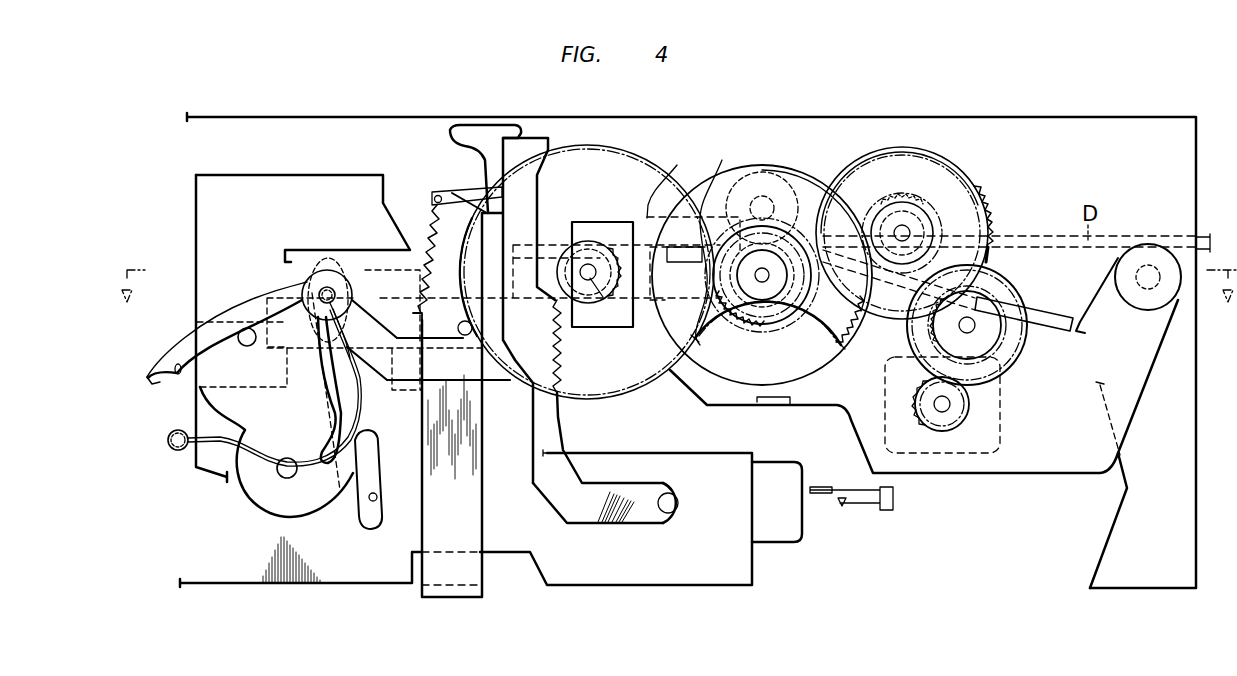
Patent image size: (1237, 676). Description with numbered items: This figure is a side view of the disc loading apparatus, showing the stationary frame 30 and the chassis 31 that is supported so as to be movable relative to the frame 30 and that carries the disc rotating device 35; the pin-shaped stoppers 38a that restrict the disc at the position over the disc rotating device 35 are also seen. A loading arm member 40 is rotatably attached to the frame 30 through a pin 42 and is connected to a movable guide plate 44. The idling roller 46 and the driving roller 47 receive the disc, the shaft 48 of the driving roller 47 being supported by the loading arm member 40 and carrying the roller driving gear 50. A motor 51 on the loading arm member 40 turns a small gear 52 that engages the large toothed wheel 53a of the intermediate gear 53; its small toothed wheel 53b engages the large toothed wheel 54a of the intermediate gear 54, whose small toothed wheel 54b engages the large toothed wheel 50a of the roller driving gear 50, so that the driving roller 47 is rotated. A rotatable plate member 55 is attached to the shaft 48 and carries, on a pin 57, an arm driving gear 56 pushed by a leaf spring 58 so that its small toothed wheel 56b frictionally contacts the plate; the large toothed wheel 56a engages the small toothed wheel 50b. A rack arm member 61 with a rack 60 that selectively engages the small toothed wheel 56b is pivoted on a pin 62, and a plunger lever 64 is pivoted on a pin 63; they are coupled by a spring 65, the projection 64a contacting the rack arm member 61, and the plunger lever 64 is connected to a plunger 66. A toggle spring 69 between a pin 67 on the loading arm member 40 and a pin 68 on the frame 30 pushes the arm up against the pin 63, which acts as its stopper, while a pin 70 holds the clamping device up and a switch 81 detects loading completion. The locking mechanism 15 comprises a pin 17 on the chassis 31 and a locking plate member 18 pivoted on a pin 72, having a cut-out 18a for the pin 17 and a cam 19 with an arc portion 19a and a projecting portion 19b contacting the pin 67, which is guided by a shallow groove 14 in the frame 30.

The shallow groove 14 is at (378, 498).
The locking mechanism 15 is at (235, 279).
The pin 17 is at (252, 346).
The locking plate member 18 is at (257, 498).
The cut-out 18a is at (176, 355).
The cam 19 is at (352, 408).
The arc portion 19a is at (338, 340).
The projecting portion 19b is at (365, 440).
The frame 30 is at (1098, 132).
The chassis 31 is at (258, 300).
The disc rotating device 35 is at (382, 272).
The pin-shaped stoppers 38a is at (692, 215).
The loading arm member 40 is at (1045, 466).
The pin 42 is at (1145, 285).
The movable guide plate 44 is at (1070, 300).
The idling roller 46 is at (745, 168).
The driving roller 47 is at (772, 312).
The shaft 48 is at (768, 278).
The roller driving gear 50 is at (804, 158).
The large toothed wheel 50a is at (820, 172).
The small toothed wheel 50b is at (757, 330).
The motor 51 is at (1000, 437).
The small gear 52 is at (970, 405).
The intermediate gear 53 is at (1016, 278).
The large toothed wheel 53a is at (1030, 300).
The small toothed wheel 53b is at (1022, 332).
The intermediate gear 54 is at (997, 188).
The large toothed wheel 54a is at (956, 172).
The small toothed wheel 54b is at (904, 205).
The rotatable plate member 55 is at (626, 222).
The arm driving gear 56 is at (610, 136).
The large toothed wheel 56a is at (700, 170).
The small toothed wheel 56b is at (588, 241).
The pin 57 is at (603, 298).
The leaf spring 58 is at (526, 246).
The rack 60 is at (563, 372).
The rack arm member 61 is at (568, 432).
The pin 62 is at (668, 515).
The pin 63 is at (458, 328).
The plunger lever 64 is at (480, 500).
The projection 64a is at (482, 185).
The spring 65 is at (430, 232).
The plunger 66 is at (800, 533).
The pin 67 is at (326, 270).
The pin 68 is at (176, 450).
The toggle spring 69 is at (268, 457).
The pin 70 is at (660, 278).
The pin 72 is at (295, 474).
The switch 81 is at (896, 504).